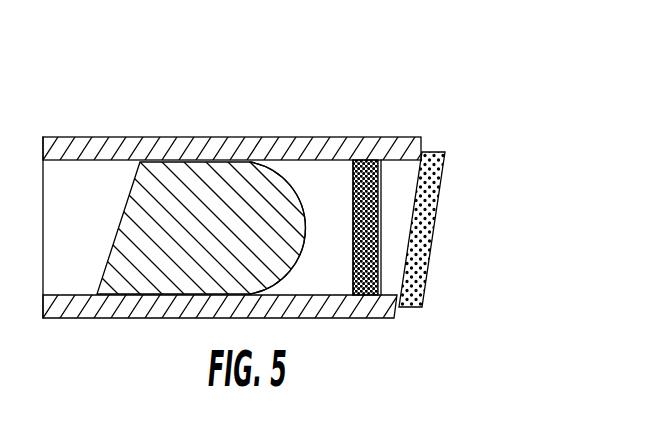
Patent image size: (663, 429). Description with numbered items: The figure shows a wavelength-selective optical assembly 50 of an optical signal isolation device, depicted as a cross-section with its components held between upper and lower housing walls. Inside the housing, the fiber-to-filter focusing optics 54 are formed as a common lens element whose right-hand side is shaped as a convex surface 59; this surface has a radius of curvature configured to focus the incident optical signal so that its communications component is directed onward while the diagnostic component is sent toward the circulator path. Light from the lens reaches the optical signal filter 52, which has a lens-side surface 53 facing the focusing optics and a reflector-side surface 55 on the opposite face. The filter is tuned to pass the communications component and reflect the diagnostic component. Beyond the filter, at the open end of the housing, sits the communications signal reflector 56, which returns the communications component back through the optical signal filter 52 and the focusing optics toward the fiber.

The wavelength-selective optical assembly 50 is at (462, 92).
The optical signal filter 52 is at (365, 183).
The lens-side surface 53 is at (352, 188).
The fiber-to-filter focusing optics 54 is at (183, 187).
The reflector-side surface 55 is at (378, 262).
The communications signal reflector 56 is at (430, 172).
The convex surface 59 is at (292, 270).